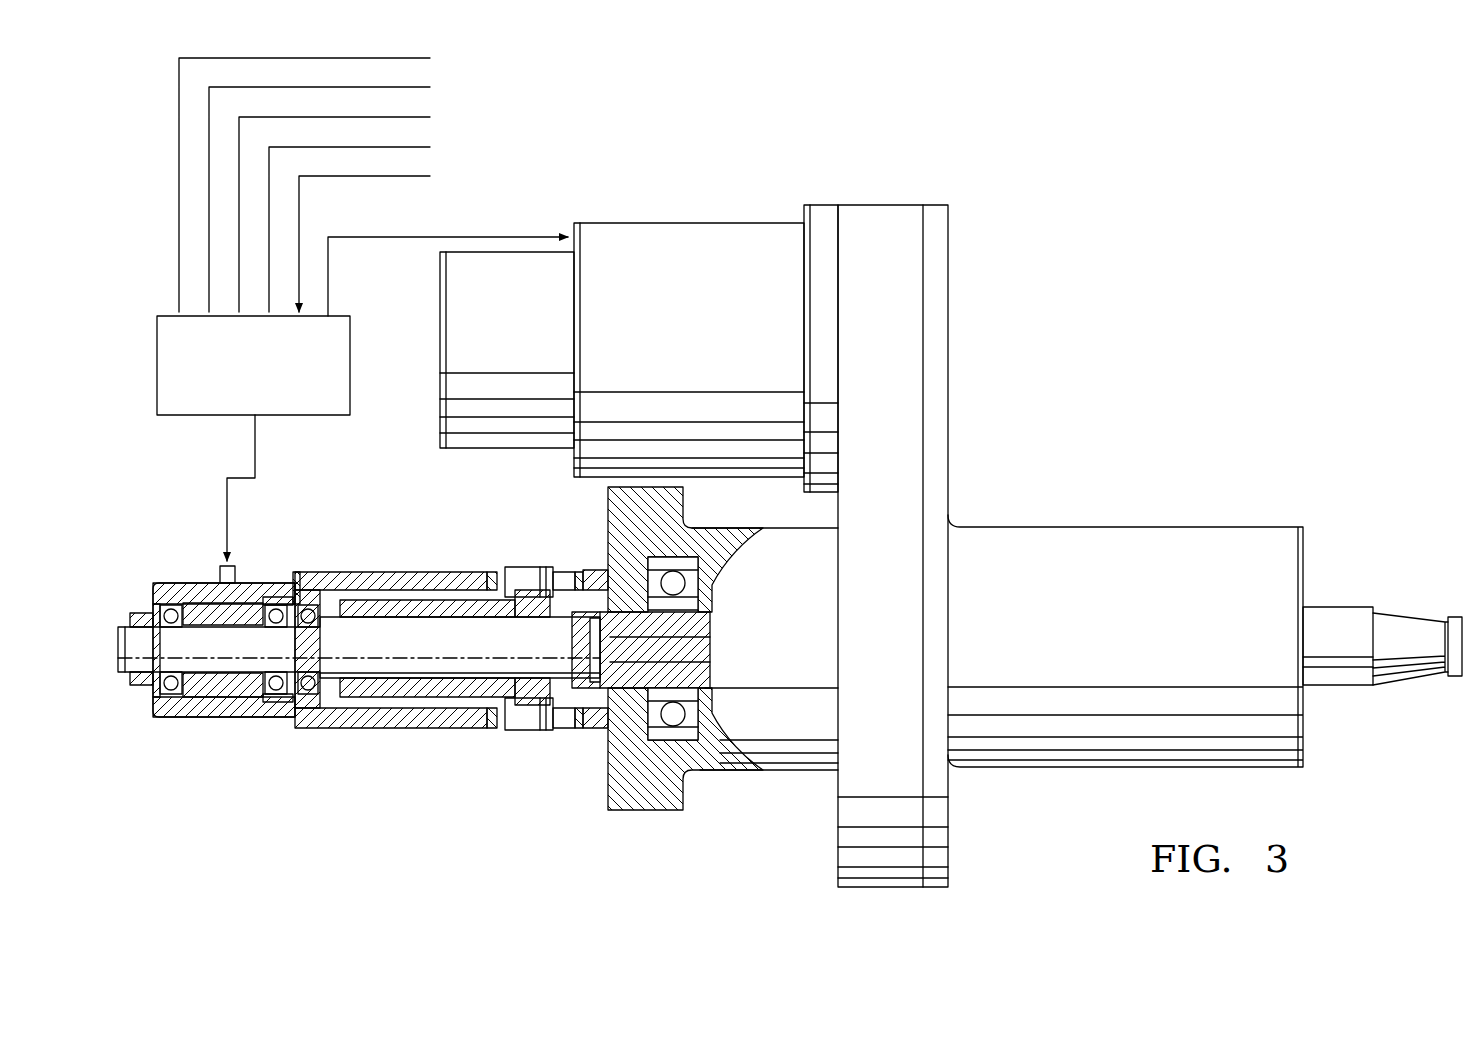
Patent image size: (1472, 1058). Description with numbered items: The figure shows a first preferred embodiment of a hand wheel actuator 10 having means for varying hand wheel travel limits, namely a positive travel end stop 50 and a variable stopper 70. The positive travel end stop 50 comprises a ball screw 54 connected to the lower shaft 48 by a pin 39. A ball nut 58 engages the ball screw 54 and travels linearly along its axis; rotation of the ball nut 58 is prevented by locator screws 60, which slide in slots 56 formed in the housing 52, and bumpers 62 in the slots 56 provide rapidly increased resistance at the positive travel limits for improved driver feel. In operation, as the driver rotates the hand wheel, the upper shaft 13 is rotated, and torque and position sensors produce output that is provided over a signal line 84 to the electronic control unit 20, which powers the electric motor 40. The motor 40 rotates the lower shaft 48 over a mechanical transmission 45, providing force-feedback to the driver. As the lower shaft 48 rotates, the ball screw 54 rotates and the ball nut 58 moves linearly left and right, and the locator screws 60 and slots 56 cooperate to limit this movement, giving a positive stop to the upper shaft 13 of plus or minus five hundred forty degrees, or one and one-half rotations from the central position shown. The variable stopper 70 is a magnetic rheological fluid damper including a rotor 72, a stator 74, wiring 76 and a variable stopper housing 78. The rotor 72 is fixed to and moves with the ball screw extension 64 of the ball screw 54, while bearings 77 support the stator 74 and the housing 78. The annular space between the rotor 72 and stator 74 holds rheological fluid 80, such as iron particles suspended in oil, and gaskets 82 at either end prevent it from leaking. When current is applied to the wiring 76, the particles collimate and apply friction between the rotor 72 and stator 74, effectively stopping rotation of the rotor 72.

The steering system 10 is at (1201, 326).
The upper shaft 13 is at (1343, 617).
The electronic control unit 20 is at (350, 397).
The pin 39 is at (608, 690).
The electric motor 40 is at (760, 253).
The mechanical transmission 45 is at (950, 382).
The lower shaft 48 is at (707, 680).
The positive travel end stop 50 is at (400, 558).
The housing 52 is at (445, 730).
The ball screw 54 is at (378, 673).
The slots 56 is at (563, 578).
The ball nut 58 is at (400, 697).
The locator screws 60 is at (523, 577).
The bumpers 62 is at (490, 572).
The ball screw extension 64 is at (300, 700).
The variable stopper 70 is at (206, 501).
The rotor 72 is at (200, 716).
The stator 74 is at (270, 710).
The wiring 76 is at (225, 712).
The bearings 77 is at (150, 613).
The variable stopper housing 78 is at (262, 575).
The rheological fluid 80 is at (197, 580).
The gaskets 82 is at (165, 712).
The signal line 84 is at (255, 445).